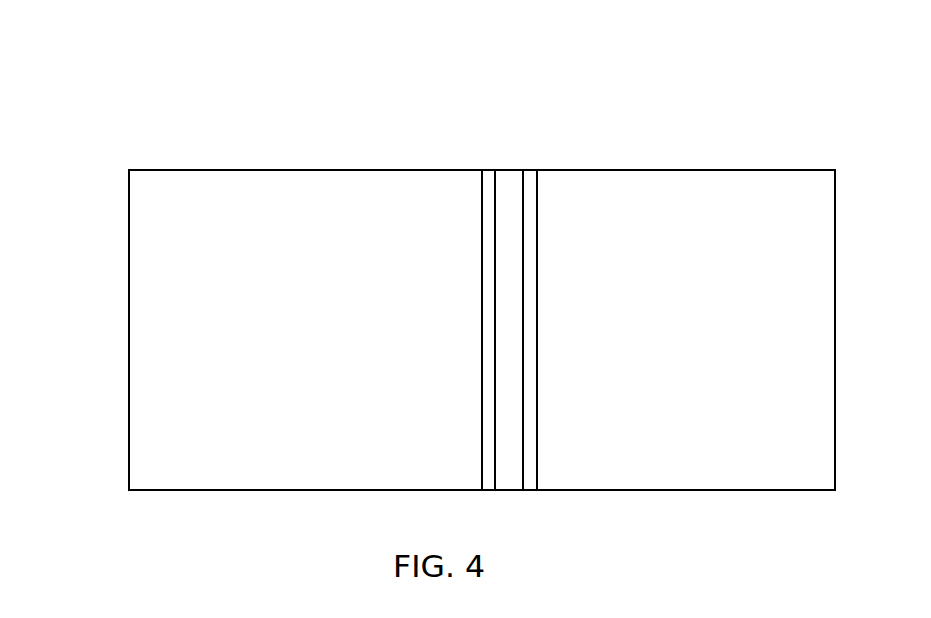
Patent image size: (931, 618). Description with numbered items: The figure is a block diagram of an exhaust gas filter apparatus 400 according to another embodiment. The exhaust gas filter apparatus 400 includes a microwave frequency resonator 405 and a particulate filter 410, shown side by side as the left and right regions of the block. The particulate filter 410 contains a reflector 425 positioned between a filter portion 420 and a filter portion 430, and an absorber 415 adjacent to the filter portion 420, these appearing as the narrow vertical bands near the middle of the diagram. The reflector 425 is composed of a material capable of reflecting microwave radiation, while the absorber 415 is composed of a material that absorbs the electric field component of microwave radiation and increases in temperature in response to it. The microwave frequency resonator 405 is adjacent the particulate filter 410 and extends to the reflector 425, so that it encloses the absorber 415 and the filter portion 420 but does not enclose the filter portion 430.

The exhaust gas filter apparatus 400 is at (100, 61).
The microwave frequency resonator 405 is at (315, 169).
The particulate filter 410 is at (668, 169).
The absorber 415 is at (490, 185).
The filter portion 420 is at (508, 182).
The reflector 425 is at (528, 182).
The filter portion 430 is at (742, 185).